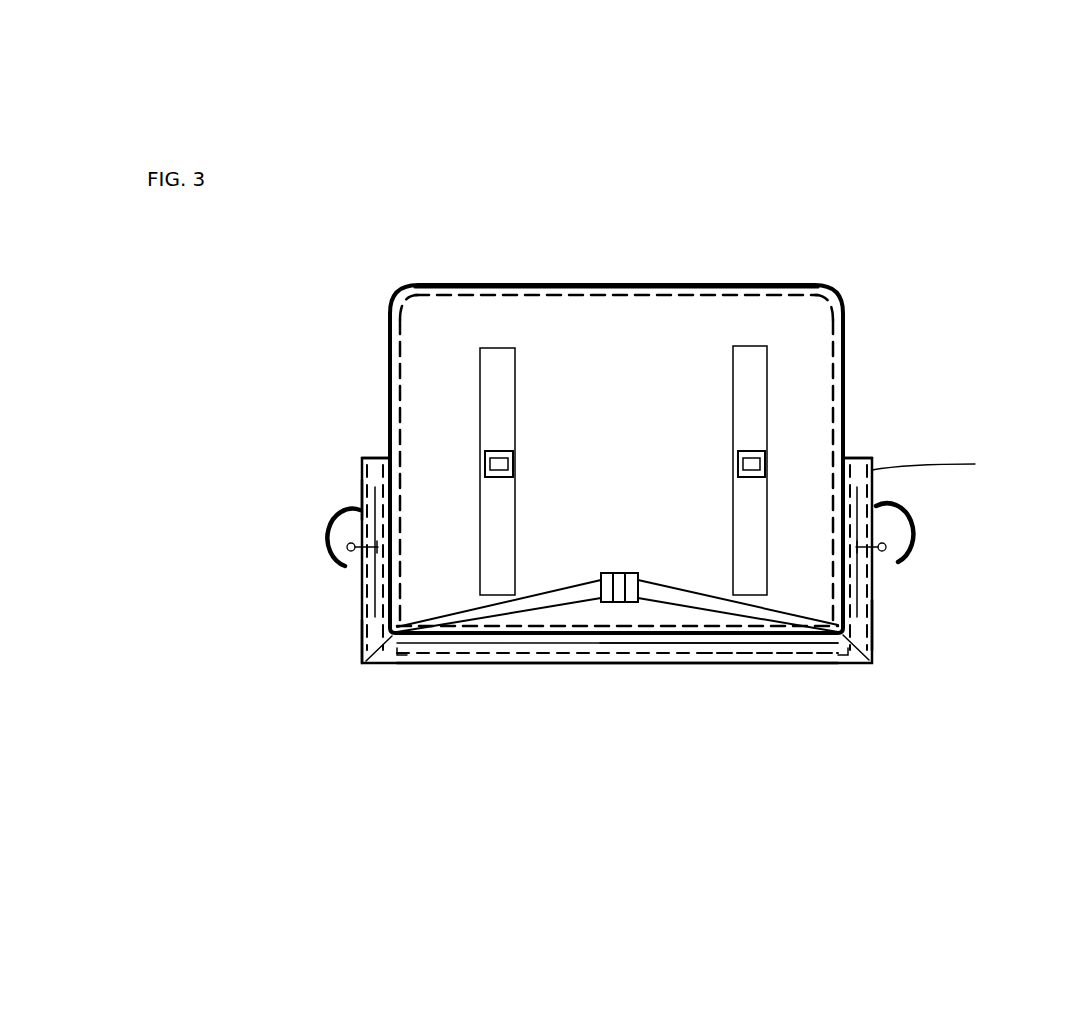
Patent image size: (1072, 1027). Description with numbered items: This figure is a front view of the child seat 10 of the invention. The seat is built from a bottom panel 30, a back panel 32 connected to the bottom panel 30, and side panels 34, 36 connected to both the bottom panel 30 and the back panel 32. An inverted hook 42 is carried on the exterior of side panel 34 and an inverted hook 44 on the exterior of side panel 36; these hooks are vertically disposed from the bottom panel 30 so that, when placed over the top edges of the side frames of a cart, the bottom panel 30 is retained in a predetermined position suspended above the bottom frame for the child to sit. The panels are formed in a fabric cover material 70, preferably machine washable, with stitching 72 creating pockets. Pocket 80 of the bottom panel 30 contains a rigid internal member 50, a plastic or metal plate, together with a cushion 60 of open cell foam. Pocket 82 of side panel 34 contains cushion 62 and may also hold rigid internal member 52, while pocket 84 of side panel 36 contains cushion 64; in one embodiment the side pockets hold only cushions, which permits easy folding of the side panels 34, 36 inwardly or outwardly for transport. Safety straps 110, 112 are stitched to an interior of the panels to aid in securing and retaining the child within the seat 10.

The child seat 10 is at (409, 286).
The bottom panel 30 is at (648, 664).
The back panel 32 is at (566, 330).
The side panel 34 is at (357, 572).
The side panel 36 is at (875, 584).
The inverted hook 42 is at (356, 536).
The inverted hook 44 is at (900, 520).
The rigid internal member 50 is at (595, 652).
The rigid internal member 52 is at (358, 493).
The cushion 60 is at (733, 653).
The cushion 62 is at (372, 636).
The cushion 64 is at (873, 650).
The fabric cover material 70 is at (876, 626).
The stitching 72 is at (830, 490).
The pocket 80 is at (364, 663).
The pocket 82 is at (362, 458).
The pocket 84 is at (864, 460).
The safety strap 110 is at (753, 388).
The safety strap 112 is at (578, 592).